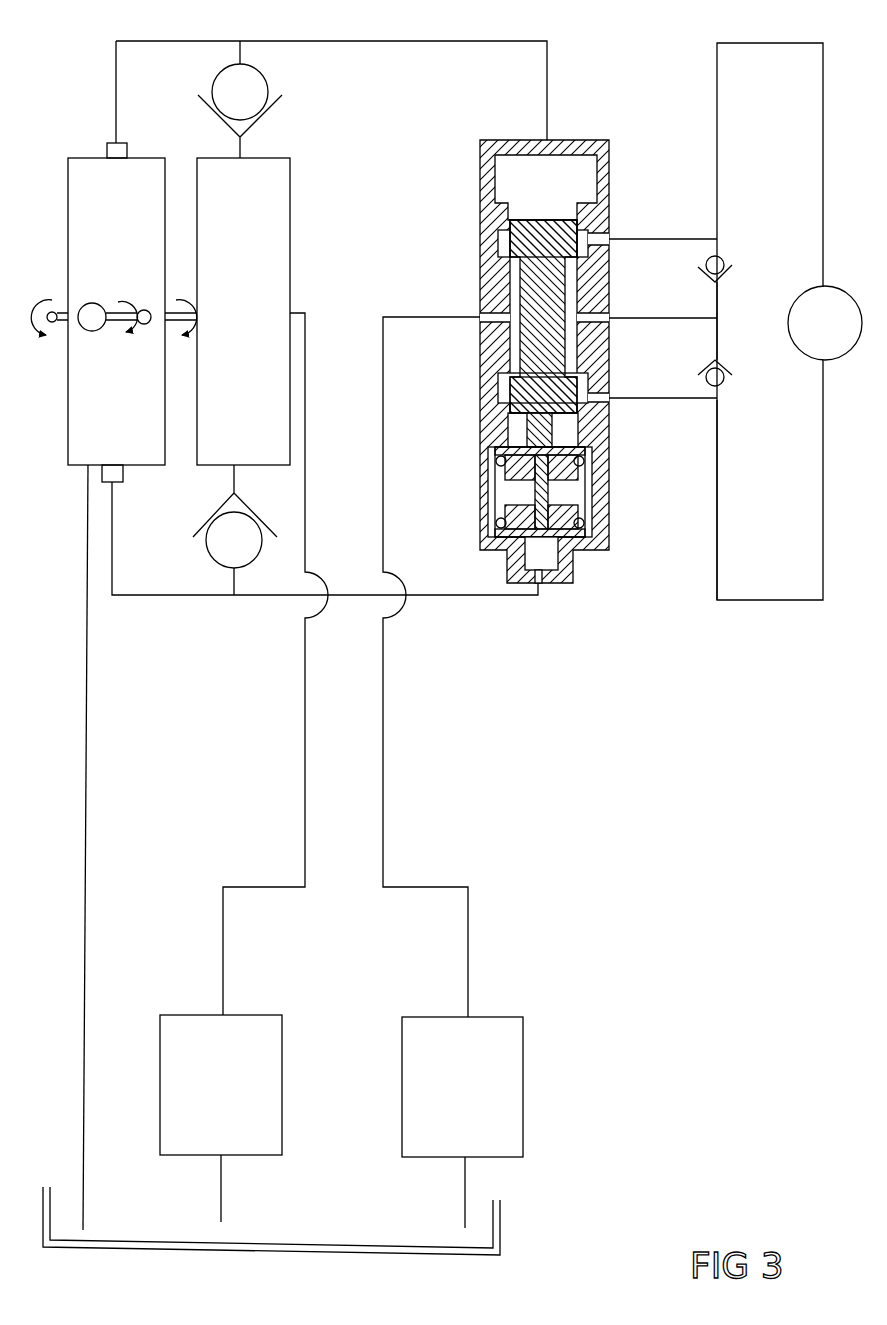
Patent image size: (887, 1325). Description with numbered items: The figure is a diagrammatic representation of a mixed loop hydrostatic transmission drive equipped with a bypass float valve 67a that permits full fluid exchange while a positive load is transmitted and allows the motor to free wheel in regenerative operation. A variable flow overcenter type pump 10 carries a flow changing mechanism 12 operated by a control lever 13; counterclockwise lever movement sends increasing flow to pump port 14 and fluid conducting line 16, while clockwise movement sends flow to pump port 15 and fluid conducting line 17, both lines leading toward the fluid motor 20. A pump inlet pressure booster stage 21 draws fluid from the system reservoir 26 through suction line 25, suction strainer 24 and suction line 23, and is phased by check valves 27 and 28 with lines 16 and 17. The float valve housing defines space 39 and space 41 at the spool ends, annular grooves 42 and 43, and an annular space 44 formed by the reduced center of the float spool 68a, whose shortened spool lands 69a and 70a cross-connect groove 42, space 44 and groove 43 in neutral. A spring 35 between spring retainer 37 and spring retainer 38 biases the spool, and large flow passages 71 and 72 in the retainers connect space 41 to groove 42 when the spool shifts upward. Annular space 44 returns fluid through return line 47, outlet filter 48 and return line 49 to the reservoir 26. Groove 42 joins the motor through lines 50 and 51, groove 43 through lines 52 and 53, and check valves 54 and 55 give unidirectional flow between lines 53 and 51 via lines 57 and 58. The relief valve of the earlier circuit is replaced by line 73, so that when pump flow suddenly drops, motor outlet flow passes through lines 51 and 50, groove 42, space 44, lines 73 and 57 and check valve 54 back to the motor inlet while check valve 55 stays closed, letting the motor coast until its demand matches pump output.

The variable flow overcenter type pump 10 is at (118, 251).
The flow changing mechanism 12 is at (92, 305).
The control lever 13 is at (144, 310).
The pump port 14 is at (122, 148).
The pump port 15 is at (120, 473).
The fluid conducting line 16 is at (355, 40).
The fluid conducting line 17 is at (354, 600).
The fluid motor 20 is at (830, 336).
The pump inlet pressure booster stage 21 is at (240, 326).
The suction line 23 is at (305, 785).
The suction strainer 24 is at (214, 1098).
The suction line 25 is at (221, 1205).
The system reservoir 26 is at (373, 1258).
The check valve 27 is at (252, 90).
The check valve 28 is at (250, 532).
The spring 35 is at (586, 498).
The spring retainer 37 is at (597, 540).
The spring retainer 38 is at (597, 456).
The space 39 is at (550, 193).
The space 41 is at (535, 560).
The annular groove 42 is at (500, 390).
The annular groove 43 is at (500, 245).
The annular space 44 is at (505, 348).
The return line 47 is at (383, 508).
The outlet filter 48 is at (464, 1098).
The return line 49 is at (465, 1195).
The line 50 is at (680, 399).
The line 51 is at (720, 545).
The line 52 is at (650, 238).
The line 53 is at (722, 126).
The check valve 54 is at (721, 262).
The check valve 55 is at (727, 375).
The line 57 is at (720, 308).
The line 58 is at (720, 350).
The bypass float valve 67a is at (478, 148).
The float spool 68a is at (530, 288).
The spool land 69a is at (510, 232).
The spool land 70a is at (512, 410).
The flow passage 71 is at (497, 466).
The flow passage 72 is at (498, 527).
The line 73 is at (648, 318).